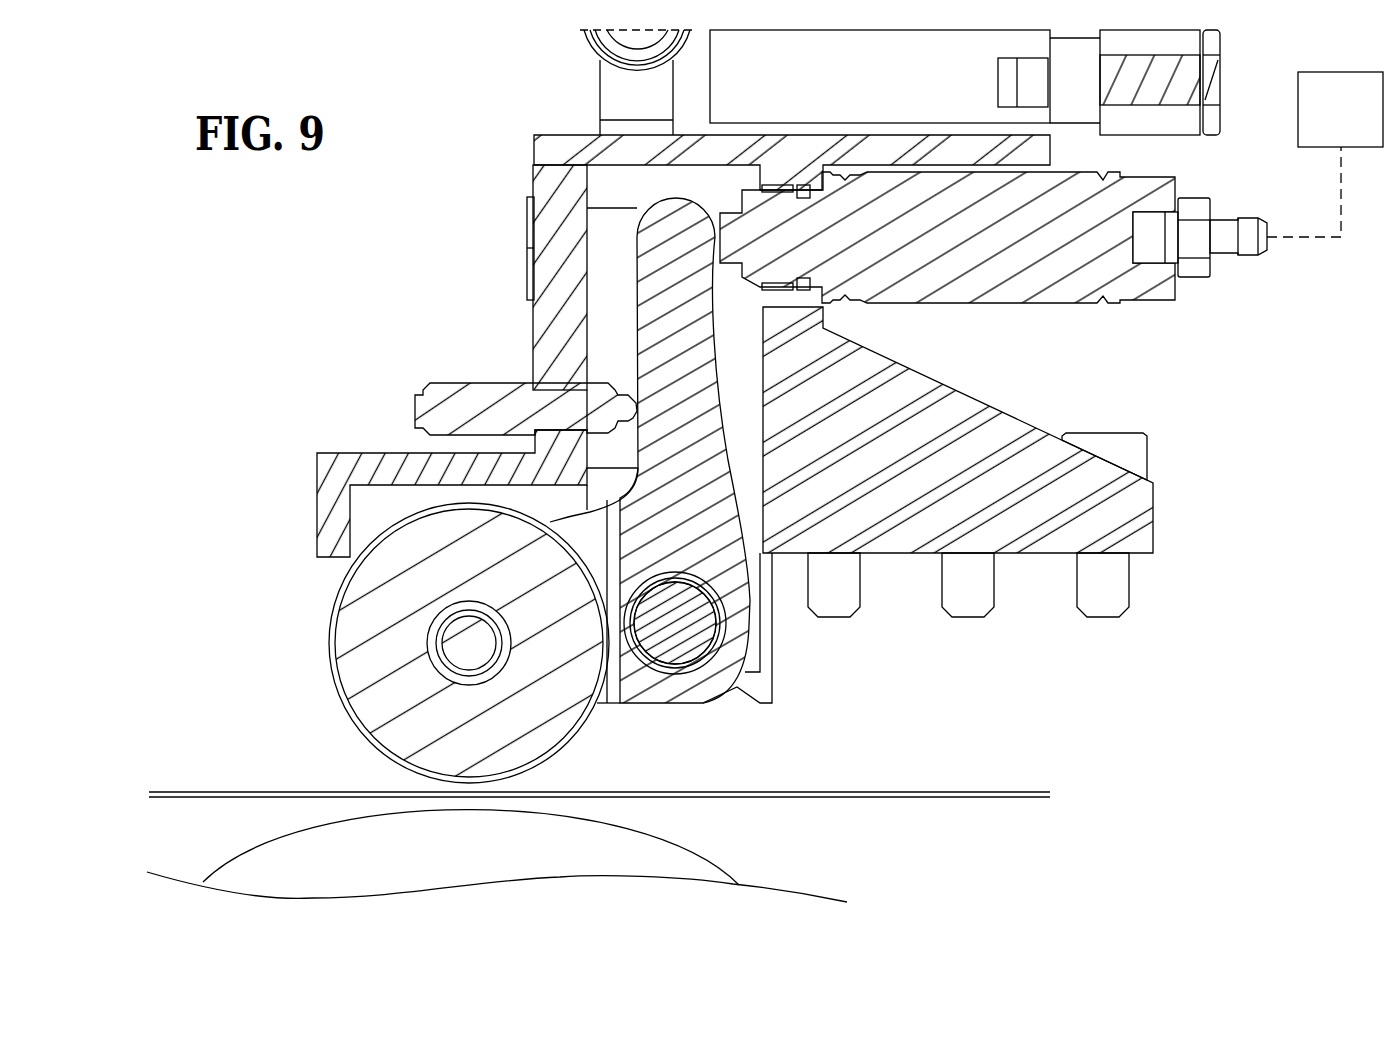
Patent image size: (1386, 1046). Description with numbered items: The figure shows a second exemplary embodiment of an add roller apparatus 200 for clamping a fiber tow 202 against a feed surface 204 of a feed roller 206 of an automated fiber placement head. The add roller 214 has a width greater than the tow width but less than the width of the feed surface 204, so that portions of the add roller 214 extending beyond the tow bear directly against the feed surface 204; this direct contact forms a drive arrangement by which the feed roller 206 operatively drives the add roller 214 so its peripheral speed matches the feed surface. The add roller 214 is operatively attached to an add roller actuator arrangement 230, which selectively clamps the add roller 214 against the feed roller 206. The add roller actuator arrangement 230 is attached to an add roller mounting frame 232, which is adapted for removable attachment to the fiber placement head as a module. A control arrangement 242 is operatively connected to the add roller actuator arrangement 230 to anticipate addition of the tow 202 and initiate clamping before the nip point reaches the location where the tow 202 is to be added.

The add roller apparatus 200 is at (405, 270).
The fiber tow 202 is at (1003, 790).
The feed surface 204 is at (710, 868).
The feed roller 206 is at (645, 858).
The add roller 214 is at (348, 636).
The add roller actuator arrangement 230 is at (700, 403).
The add roller mounting frame 232 is at (1046, 540).
The control arrangement 242 is at (1322, 124).